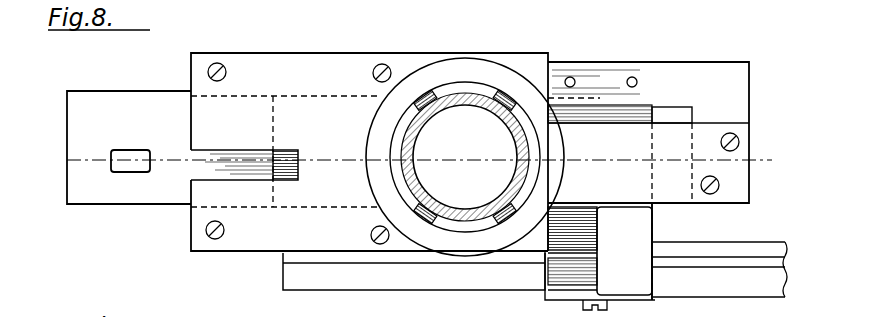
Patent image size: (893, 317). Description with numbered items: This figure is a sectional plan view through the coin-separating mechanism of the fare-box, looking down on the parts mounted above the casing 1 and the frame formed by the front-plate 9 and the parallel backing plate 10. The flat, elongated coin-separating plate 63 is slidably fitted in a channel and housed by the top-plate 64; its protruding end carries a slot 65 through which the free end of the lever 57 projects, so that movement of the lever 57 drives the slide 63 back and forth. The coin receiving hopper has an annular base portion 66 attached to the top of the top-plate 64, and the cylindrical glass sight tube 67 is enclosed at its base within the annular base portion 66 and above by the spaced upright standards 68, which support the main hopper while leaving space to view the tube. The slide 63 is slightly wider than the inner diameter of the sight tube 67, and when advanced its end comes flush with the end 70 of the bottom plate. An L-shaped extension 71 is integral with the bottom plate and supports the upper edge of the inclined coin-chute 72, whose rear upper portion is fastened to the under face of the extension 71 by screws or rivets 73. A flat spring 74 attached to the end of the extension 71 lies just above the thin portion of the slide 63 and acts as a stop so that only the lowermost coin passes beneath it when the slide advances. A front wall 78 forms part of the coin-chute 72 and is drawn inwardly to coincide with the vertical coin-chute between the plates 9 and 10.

The casing 1 is at (325, 34).
The front-plate 9 is at (51, 203).
The backing plate 10 is at (593, 198).
The lever 57 is at (118, 150).
The coin-separating plate 63 is at (165, 104).
The top-plate 64 is at (268, 228).
The slot 65 is at (150, 182).
The annular base portion 66 is at (440, 66).
The sight tube 67 is at (470, 92).
The upright standards 68 is at (416, 98).
The end of bottom plate 70 is at (585, 219).
The L-shaped extension 71 is at (735, 84).
The inclined coin-chute 72 is at (650, 106).
The screws or rivets 73 is at (572, 80).
The flat spring 74 is at (668, 192).
The front wall 78 is at (580, 288).